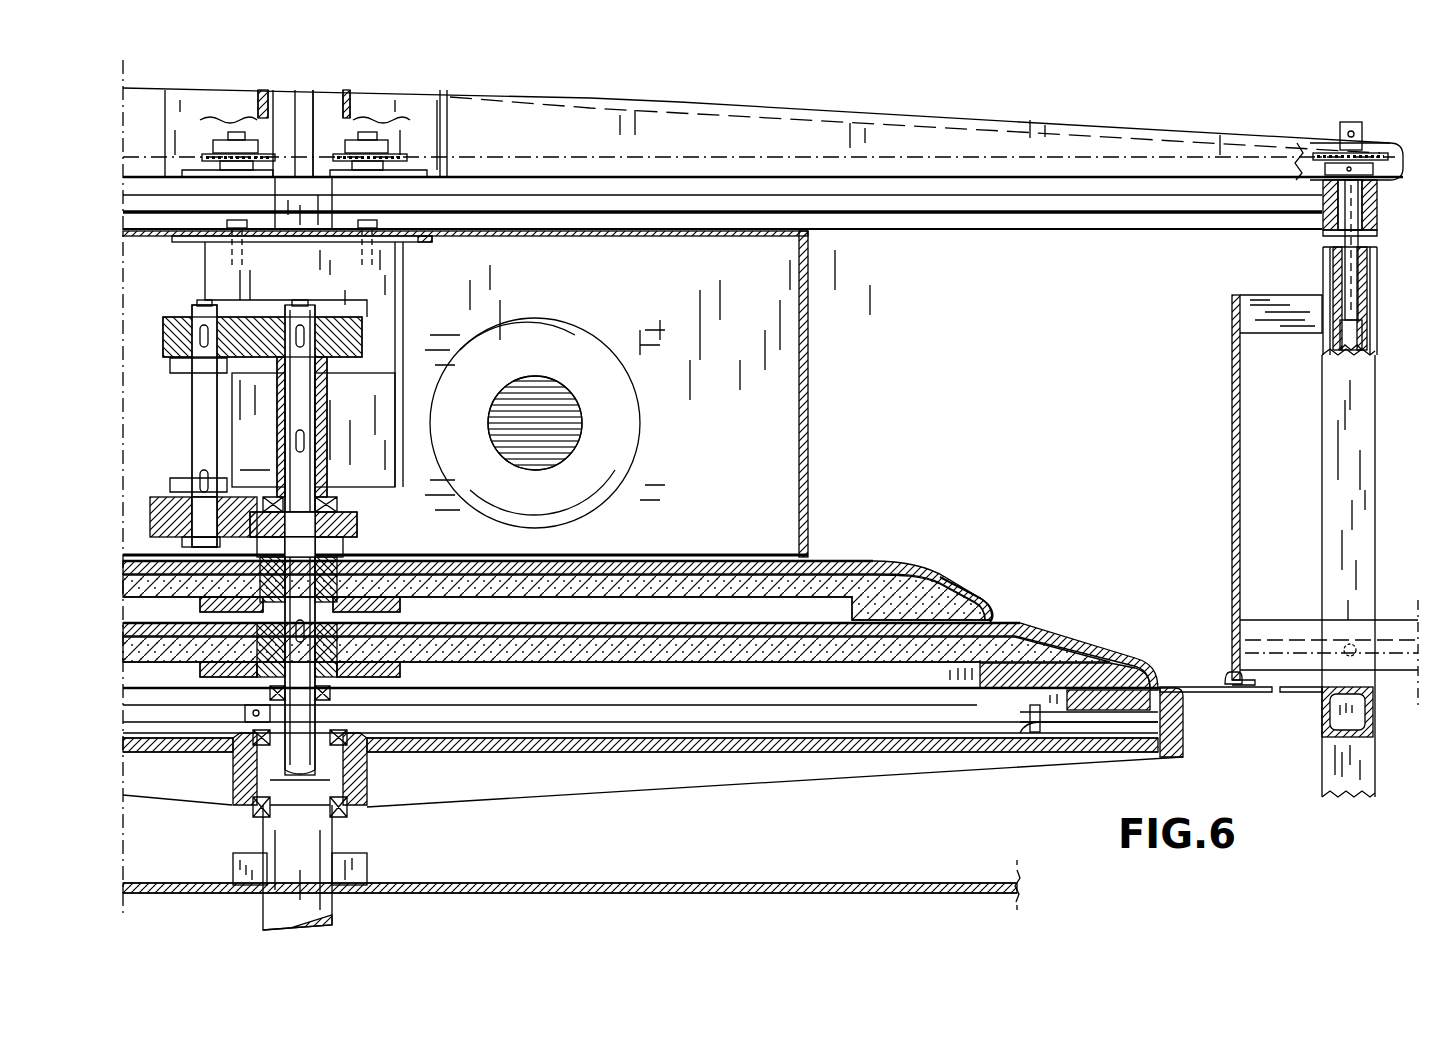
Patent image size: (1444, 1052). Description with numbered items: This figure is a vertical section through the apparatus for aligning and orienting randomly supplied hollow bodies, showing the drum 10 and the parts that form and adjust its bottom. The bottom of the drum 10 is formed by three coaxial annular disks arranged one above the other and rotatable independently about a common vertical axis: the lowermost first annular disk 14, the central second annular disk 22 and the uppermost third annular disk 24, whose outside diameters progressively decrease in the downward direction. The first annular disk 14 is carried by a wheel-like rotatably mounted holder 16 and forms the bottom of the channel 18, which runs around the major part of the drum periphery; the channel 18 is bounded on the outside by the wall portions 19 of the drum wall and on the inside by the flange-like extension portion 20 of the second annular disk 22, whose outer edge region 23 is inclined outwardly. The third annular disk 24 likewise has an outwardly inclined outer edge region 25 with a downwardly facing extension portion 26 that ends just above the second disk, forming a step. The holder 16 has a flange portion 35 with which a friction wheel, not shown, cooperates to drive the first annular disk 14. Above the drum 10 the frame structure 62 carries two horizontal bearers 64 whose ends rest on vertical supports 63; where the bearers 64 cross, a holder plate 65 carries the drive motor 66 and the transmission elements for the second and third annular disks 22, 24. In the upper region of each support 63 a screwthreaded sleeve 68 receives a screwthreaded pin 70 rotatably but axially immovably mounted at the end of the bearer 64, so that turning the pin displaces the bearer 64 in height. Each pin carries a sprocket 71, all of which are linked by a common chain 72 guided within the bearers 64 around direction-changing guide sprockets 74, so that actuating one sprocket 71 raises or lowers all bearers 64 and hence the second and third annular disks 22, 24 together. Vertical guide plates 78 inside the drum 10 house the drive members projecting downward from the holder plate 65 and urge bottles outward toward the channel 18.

The drum 10 is at (1062, 446).
The first annular disk 14 is at (1231, 693).
The holder 16 is at (515, 750).
The channel 18 is at (1200, 648).
The wall portions 19 is at (1234, 520).
The flange-like extension portion 20 is at (1170, 640).
The second annular disk 22 is at (1022, 628).
The outer edge region 23 is at (1137, 640).
The third annular disk 24 is at (893, 565).
The outer edge region 25 is at (950, 580).
The extension portion 26 is at (994, 606).
The flange portion 35 is at (1186, 735).
The frame structure 62 is at (1375, 713).
The vertical supports 63 is at (1331, 503).
The bearers 64 is at (1266, 222).
The holder plate 65 is at (425, 243).
The drive motor 66 is at (573, 342).
The screwthreaded sleeve 68 is at (1368, 286).
The screwthreaded pin 70 is at (1358, 303).
The sprocket 71 is at (1366, 149).
The chain 72 is at (1240, 155).
The guide sprockets 74 is at (182, 167).
The guide plates 78 is at (812, 377).